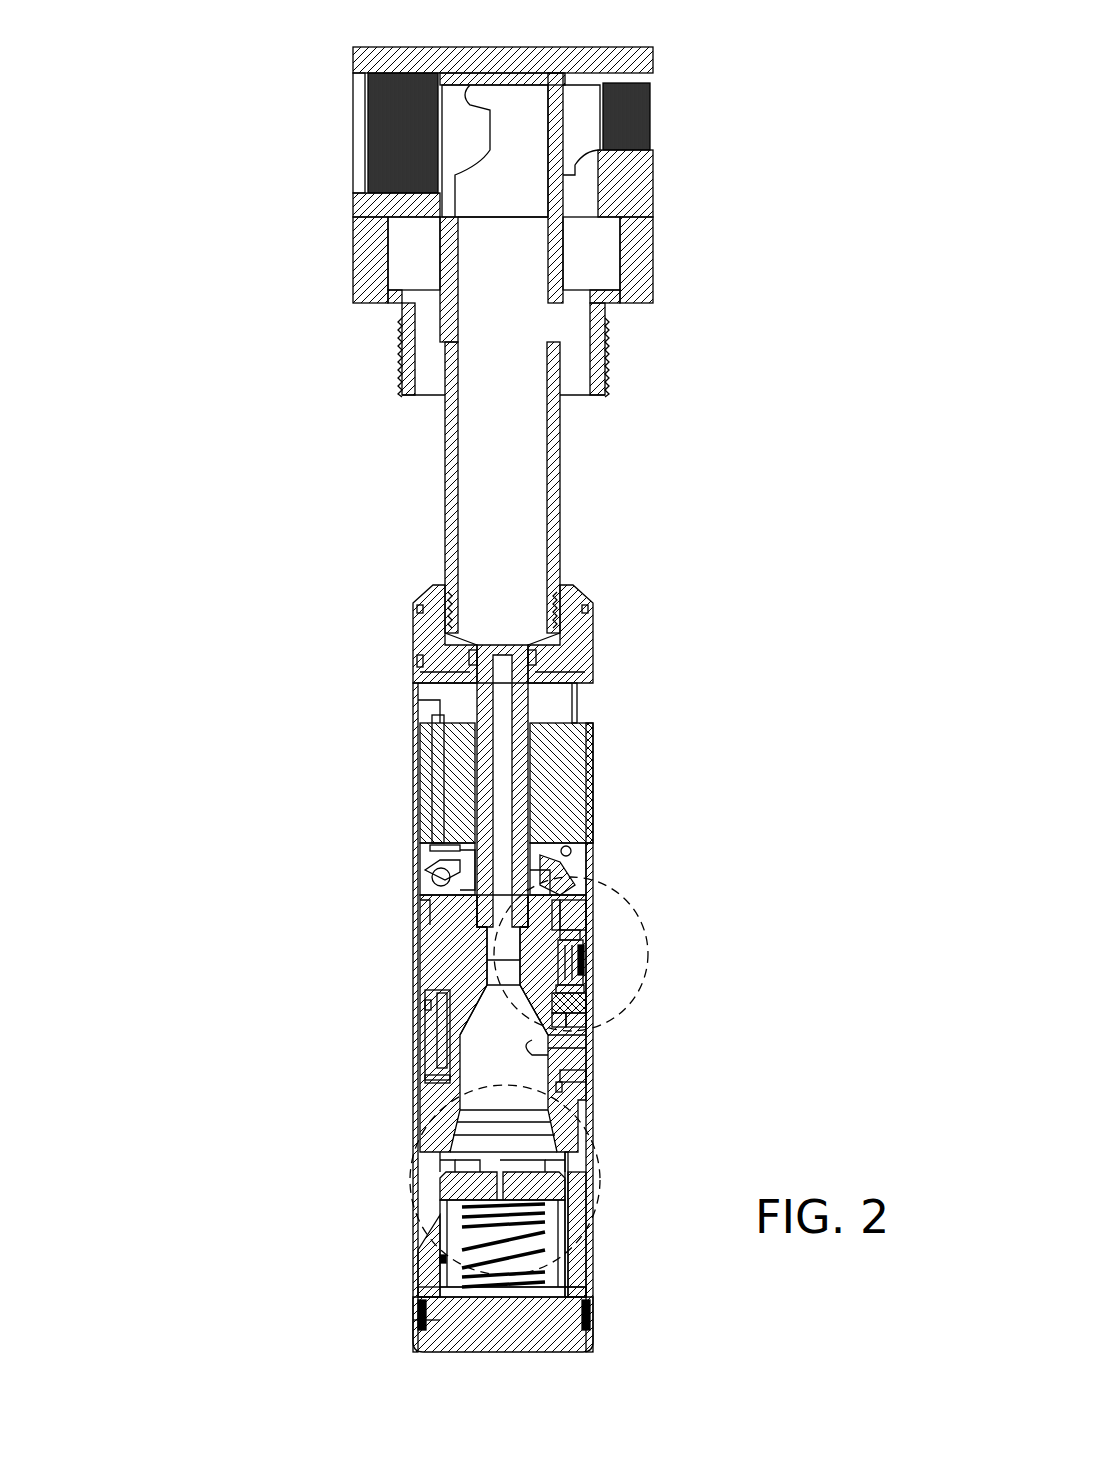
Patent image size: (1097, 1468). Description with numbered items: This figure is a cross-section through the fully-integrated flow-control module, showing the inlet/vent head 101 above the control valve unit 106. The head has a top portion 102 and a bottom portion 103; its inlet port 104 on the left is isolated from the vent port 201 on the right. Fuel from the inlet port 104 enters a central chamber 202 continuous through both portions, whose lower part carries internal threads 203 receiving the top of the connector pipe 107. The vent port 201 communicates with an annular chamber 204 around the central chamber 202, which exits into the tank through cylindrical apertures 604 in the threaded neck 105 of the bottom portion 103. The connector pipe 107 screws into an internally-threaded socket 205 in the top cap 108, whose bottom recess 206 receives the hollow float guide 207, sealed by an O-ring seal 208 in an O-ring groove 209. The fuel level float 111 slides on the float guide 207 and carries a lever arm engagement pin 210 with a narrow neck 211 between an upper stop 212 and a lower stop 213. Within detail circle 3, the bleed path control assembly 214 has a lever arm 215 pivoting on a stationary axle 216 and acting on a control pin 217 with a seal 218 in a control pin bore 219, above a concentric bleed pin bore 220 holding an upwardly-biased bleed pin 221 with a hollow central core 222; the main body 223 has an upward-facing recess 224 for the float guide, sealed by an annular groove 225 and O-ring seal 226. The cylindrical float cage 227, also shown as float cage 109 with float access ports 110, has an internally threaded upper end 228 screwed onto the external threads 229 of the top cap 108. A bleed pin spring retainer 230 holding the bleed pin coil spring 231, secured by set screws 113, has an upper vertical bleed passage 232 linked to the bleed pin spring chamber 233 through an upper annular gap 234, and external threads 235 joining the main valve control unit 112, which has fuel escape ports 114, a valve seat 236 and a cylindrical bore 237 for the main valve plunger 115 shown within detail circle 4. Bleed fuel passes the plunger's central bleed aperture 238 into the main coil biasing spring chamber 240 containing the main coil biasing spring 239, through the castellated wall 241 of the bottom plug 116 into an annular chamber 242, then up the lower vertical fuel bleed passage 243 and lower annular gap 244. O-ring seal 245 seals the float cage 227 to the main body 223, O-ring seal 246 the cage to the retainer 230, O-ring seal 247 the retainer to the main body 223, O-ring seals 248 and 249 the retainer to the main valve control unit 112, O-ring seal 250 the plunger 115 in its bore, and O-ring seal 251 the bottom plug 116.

The inlet/vent head 101 is at (690, 185).
The top portion 102 is at (572, 75).
The bottom portion 103 is at (640, 266).
The inlet port 104 is at (310, 92).
The threaded neck 105 is at (405, 348).
The control valve unit 106 is at (632, 836).
The connector pipe 107 is at (453, 480).
The top cap 108 is at (438, 596).
The float cage 109 is at (565, 710).
The float access ports 110 is at (455, 709).
The fuel level float 111 is at (575, 767).
The main valve control unit 112 is at (440, 1130).
The set screws 113 is at (590, 1027).
The fuel escape ports 114 is at (420, 1165).
The main valve plunger 115 is at (570, 1232).
The bottom plug 116 is at (530, 1338).
The vent port 201 is at (655, 105).
The central chamber 202 is at (498, 252).
The internal threads 203 is at (562, 320).
The annular chamber 204 is at (413, 249).
The internally-threaded socket 205 is at (560, 603).
The bottom recess 206 is at (432, 640).
The float guide 207 is at (565, 760).
The O-ring seal 208 is at (420, 657).
The O-ring groove 209 is at (560, 652).
The lever arm engagement pin 210 is at (448, 768).
The narrow neck 211 is at (440, 860).
The upper stop 212 is at (430, 844).
The lower stop 213 is at (445, 875).
The bleed path control assembly 214 is at (420, 915).
The lever arm 215 is at (440, 830).
The stationary axle 216 is at (570, 836).
The control pin 217 is at (595, 916).
The seal 218 is at (592, 941).
The control pin bore 219 is at (602, 906).
The bleed pin bore 220 is at (590, 967).
The bleed pin 221 is at (462, 983).
The hollow central core 222 is at (592, 956).
The main body 223 is at (470, 918).
The upward-facing recess 224 is at (465, 933).
The annular groove 225 is at (585, 872).
The O-ring seal 226 is at (490, 900).
The float cage 227 is at (420, 741).
The internally threaded upper end 228 is at (585, 626).
The external threads 229 is at (428, 616).
The bleed pin spring retainer 230 is at (430, 1045).
The bleed pin coil spring 231 is at (592, 986).
The upper vertical bleed passage 232 is at (430, 1085).
The bleed pin spring chamber 233 is at (590, 1017).
The upper annular gap 234 is at (425, 1025).
The external threads 235 is at (585, 1062).
The valve seat 236 is at (562, 1142).
The cylindrical bore 237 is at (442, 1272).
The central bleed aperture 238 is at (440, 1173).
The main coil biasing spring 239 is at (560, 1277).
The main coil biasing spring chamber 240 is at (570, 1302).
The castellated wall 241 is at (445, 1345).
The annular chamber 242 is at (575, 1292).
The lower vertical fuel bleed passage 243 is at (580, 1237).
The lower annular gap 244 is at (585, 1077).
The O-ring seal 245 is at (465, 960).
The O-ring seal 246 is at (602, 1012).
The O-ring seal 247 is at (425, 1066).
The O-ring seal 248 is at (590, 1047).
The O-ring seal 249 is at (590, 1092).
The O-ring seal 250 is at (430, 1254).
The O-ring seal 251 is at (425, 1323).
The cylindrical apertures 604 is at (403, 373).
The detail circle 3 is at (628, 893).
The detail circle 4 is at (440, 1190).